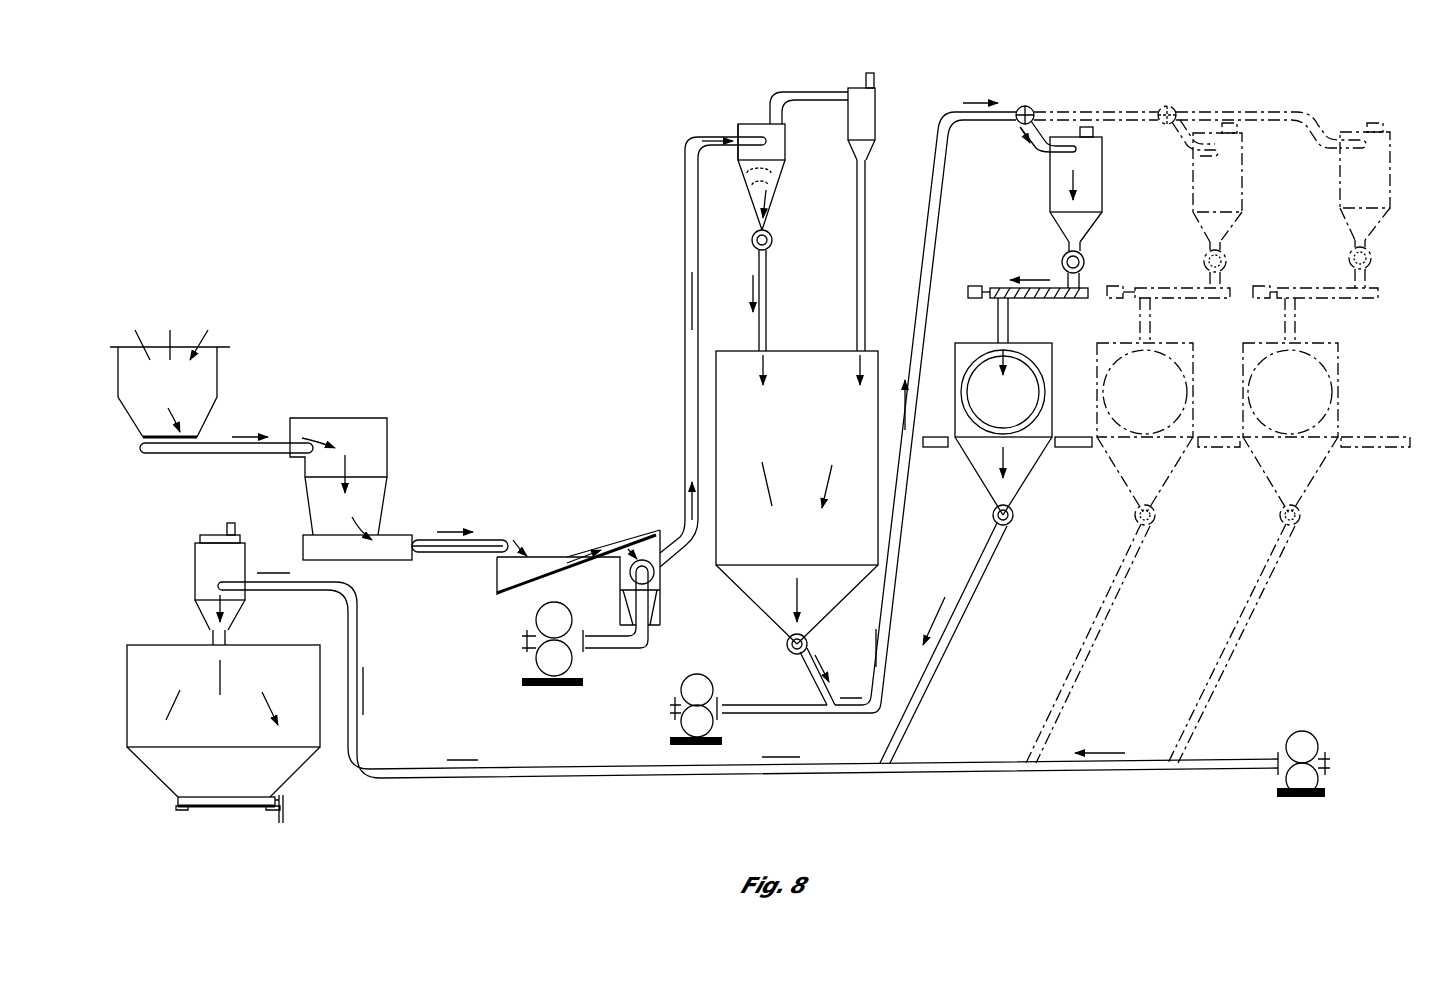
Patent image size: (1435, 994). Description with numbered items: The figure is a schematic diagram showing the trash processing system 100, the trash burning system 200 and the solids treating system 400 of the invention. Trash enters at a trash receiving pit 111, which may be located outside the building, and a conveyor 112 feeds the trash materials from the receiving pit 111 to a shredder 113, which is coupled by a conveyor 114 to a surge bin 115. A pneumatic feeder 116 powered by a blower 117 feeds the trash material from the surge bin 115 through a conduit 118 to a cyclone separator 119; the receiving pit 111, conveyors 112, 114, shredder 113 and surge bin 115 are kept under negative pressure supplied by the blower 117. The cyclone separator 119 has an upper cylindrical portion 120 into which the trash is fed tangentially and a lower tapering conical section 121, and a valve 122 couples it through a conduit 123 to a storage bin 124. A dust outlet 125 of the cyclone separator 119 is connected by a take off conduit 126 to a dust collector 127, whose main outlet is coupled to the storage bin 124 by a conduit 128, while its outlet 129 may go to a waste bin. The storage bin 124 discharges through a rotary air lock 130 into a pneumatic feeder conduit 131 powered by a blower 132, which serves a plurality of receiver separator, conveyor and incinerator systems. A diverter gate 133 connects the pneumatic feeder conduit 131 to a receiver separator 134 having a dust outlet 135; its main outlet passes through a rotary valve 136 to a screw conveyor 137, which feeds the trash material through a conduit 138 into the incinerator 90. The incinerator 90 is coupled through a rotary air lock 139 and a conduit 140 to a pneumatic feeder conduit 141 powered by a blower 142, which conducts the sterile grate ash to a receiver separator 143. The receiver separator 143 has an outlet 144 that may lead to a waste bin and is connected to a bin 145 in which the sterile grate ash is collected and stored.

The trash processing system 100 is at (583, 438).
The trash receiving pit 111 is at (218, 366).
The conveyor 112 is at (216, 445).
The shredder 113 is at (387, 428).
The conveyor 114 is at (486, 540).
The surge bin 115 is at (553, 557).
The pneumatic feeder 116 is at (660, 582).
The blower 117 is at (583, 672).
The conduit 118 is at (686, 258).
The cyclone separator 119 is at (787, 143).
The upper cylindrical portion 120 is at (738, 126).
The lower tapering conical section 121 is at (778, 192).
The valve 122 is at (773, 240).
The conduit 123 is at (768, 313).
The storage bin 124 is at (797, 497).
The dust outlet 125 is at (770, 114).
The take off conduit 126 is at (813, 92).
The dust collector 127 is at (876, 121).
The conduit 128 is at (866, 194).
The outlet 129 is at (874, 78).
The rotary air lock 130 is at (787, 644).
The pneumatic feeder conduit 131 is at (898, 578).
The blower 132 is at (722, 731).
The diverter gate 133 is at (1027, 106).
The receiver separator 134 is at (1103, 176).
The dust outlet 135 is at (1094, 130).
The rotary valve 136 is at (1085, 261).
The screw conveyor 137 is at (1042, 300).
The conduit 138 is at (998, 318).
The rotary air lock 139 is at (1014, 515).
The conduit 140 is at (948, 637).
The pneumatic feeder conduit 141 is at (773, 776).
The blower 142 is at (1316, 746).
The receiver separator 143 is at (246, 553).
The outlet 144 is at (234, 523).
The bin 145 is at (223, 734).
The incinerator 90 is at (1055, 376).
The trash burning system 200 is at (1350, 349).
The solids treating system 400 is at (493, 785).